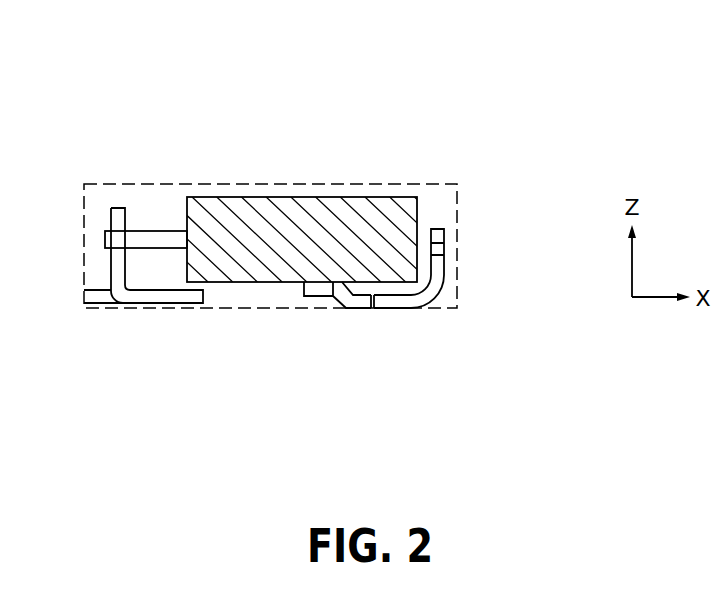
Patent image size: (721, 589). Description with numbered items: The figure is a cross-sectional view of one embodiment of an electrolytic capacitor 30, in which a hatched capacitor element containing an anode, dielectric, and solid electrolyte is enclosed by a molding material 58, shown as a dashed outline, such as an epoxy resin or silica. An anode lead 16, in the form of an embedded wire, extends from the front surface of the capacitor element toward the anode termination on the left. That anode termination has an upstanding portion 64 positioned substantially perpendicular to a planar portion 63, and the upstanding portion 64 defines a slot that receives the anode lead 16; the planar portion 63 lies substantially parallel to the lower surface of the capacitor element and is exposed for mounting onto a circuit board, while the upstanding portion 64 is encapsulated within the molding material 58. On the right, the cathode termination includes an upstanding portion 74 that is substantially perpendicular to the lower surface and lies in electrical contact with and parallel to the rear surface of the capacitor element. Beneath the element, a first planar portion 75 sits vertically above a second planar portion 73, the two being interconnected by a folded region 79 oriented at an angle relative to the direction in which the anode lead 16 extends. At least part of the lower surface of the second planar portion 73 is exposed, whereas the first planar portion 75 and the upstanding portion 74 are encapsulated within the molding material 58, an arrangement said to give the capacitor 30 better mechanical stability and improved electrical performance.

The capacitor 30 is at (338, 118).
The molding material 58 is at (178, 193).
The anode lead 16 is at (148, 242).
The upstanding portion 64 is at (120, 219).
The planar portion 63 is at (162, 293).
The first planar portion 75 is at (316, 291).
The folded region 79 is at (350, 310).
The second planar portion 73 is at (403, 308).
The upstanding portion 74 is at (433, 269).